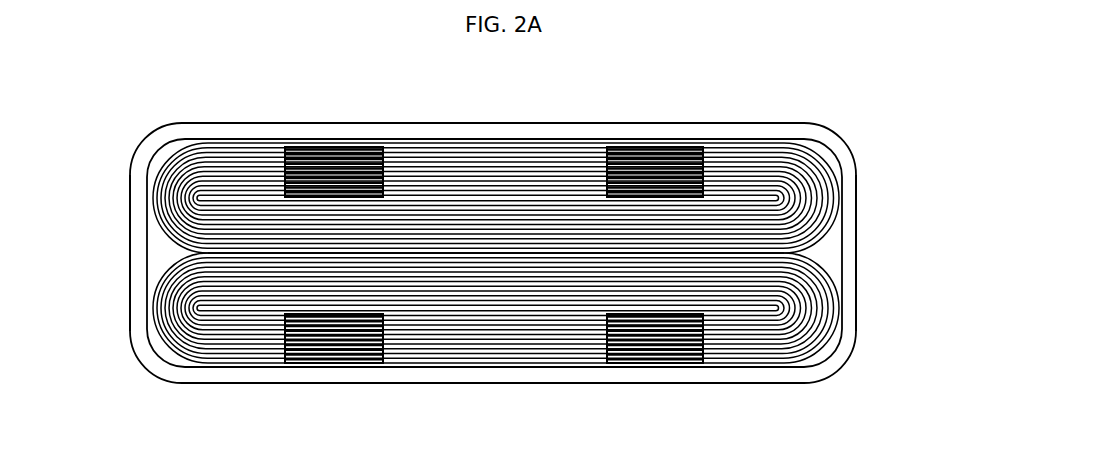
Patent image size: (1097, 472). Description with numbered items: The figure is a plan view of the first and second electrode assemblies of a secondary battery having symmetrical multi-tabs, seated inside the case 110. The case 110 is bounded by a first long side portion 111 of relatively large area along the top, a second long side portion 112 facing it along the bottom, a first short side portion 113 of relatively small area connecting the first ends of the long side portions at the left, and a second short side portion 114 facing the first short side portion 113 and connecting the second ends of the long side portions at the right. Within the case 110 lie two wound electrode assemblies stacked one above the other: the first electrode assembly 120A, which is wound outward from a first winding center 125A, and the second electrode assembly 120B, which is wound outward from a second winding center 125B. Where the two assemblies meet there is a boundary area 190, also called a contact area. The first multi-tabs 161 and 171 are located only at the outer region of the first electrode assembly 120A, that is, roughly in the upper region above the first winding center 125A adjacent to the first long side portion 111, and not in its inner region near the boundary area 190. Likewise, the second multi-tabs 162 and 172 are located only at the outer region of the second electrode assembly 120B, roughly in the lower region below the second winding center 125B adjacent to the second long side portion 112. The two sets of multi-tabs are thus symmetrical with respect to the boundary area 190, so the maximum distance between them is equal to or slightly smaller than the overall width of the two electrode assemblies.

The case 110 is at (841, 386).
The first long side portion 111 is at (522, 123).
The second long side portion 112 is at (522, 383).
The first short side portion 113 is at (130, 236).
The second short side portion 114 is at (857, 237).
The first electrode assembly 120A is at (854, 195).
The second electrode assembly 120B is at (854, 310).
The first winding center 125A is at (778, 198).
The second winding center 125B is at (758, 313).
The first multi-tab 161 is at (331, 148).
The second multi-tab 162 is at (332, 363).
The first multi-tab 171 is at (653, 147).
The second multi-tab 172 is at (653, 363).
The boundary area 190 is at (815, 257).